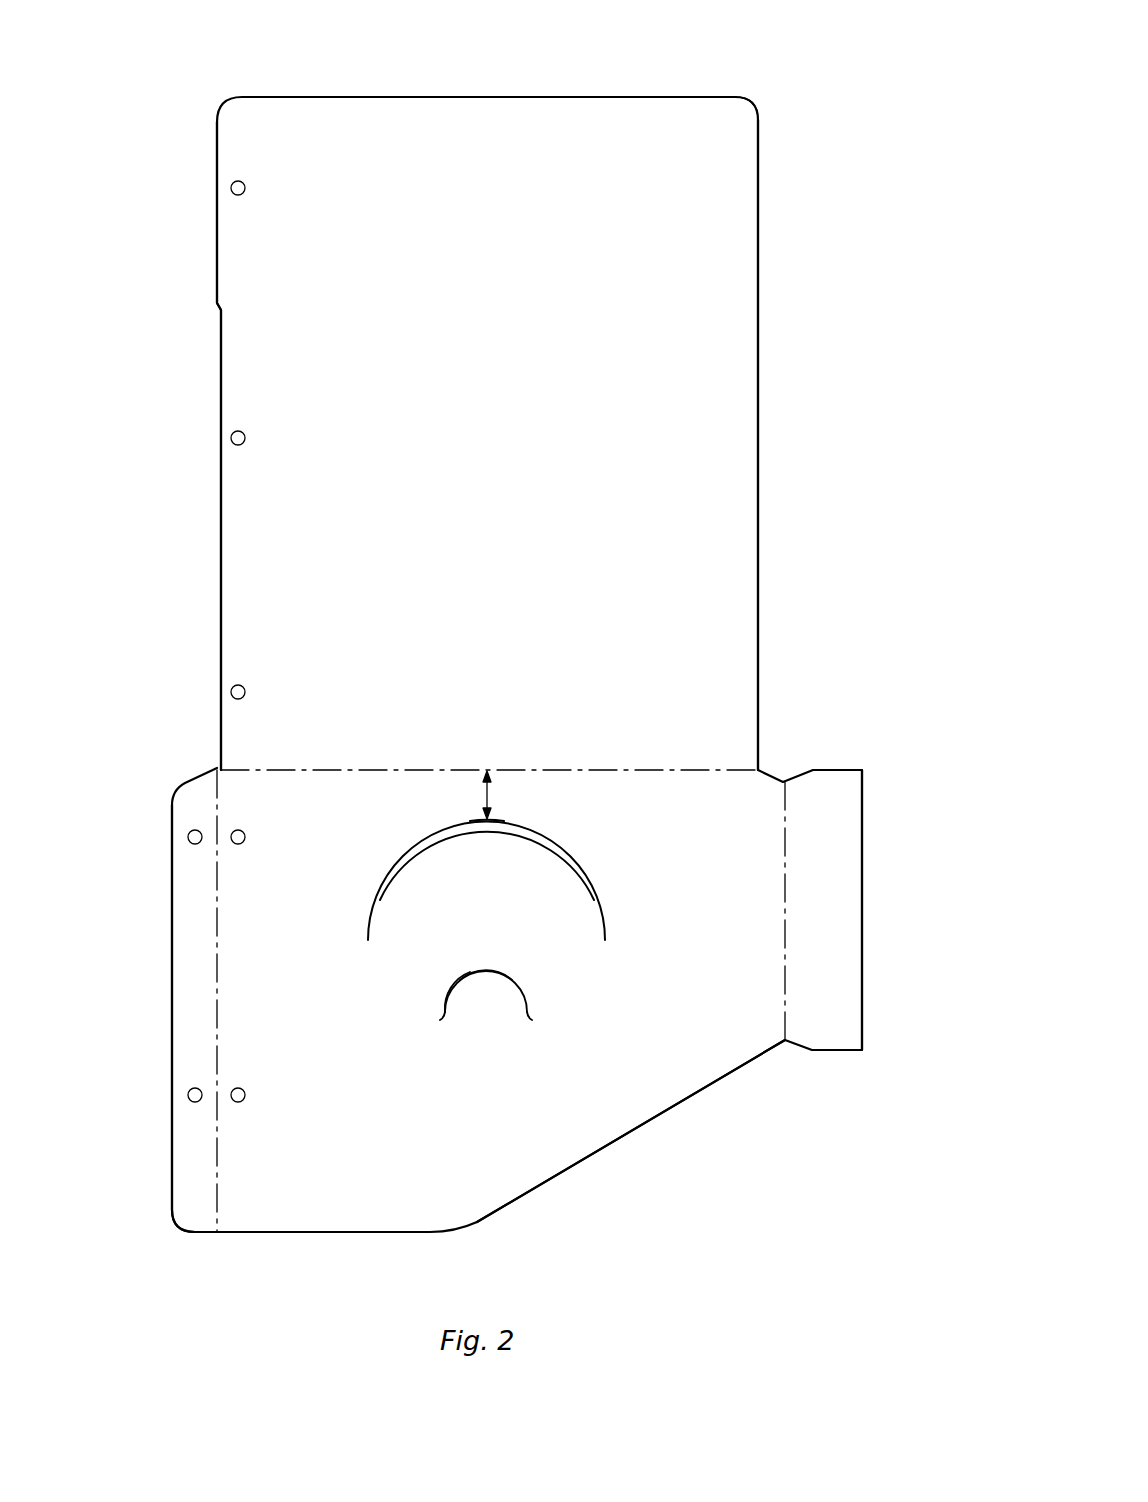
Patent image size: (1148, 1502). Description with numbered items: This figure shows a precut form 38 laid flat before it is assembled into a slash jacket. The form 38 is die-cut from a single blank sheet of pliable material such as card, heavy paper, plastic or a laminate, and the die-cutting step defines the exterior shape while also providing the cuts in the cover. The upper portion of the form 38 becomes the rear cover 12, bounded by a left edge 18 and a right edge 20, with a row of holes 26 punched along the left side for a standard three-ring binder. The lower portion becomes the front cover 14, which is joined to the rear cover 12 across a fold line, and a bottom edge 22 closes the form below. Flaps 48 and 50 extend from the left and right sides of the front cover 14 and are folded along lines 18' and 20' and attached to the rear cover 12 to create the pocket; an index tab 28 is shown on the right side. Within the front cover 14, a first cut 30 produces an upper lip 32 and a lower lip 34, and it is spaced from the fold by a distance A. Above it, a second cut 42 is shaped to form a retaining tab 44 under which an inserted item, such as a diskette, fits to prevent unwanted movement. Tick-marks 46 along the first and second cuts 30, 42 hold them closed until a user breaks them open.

The precut form 38 is at (450, 62).
The rear cover 12 is at (748, 108).
The right edge 20 is at (790, 445).
The left edge 18 is at (188, 446).
The holes 26 is at (232, 186).
The flap 50 is at (852, 815).
The index tab 28 is at (797, 940).
The flap 48 is at (188, 963).
The lower lip 34 is at (497, 817).
The upper lip 32 is at (490, 850).
The first cut 30 is at (600, 900).
The tick-marks 46 is at (455, 967).
The second cut 42 is at (522, 987).
The retaining tab 44 is at (476, 1007).
The distance between fold line and cutout A is at (496, 795).
The fold line 20' is at (631, 1118).
The fold line 18' is at (153, 1007).
The front cover 14 is at (290, 1205).
The bottom edge of second panel 22 is at (330, 1235).